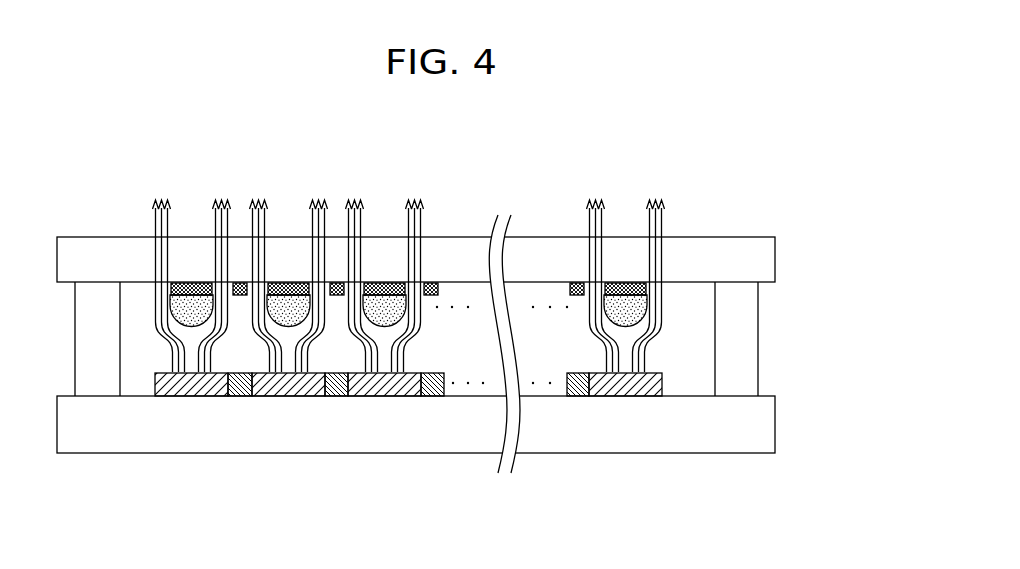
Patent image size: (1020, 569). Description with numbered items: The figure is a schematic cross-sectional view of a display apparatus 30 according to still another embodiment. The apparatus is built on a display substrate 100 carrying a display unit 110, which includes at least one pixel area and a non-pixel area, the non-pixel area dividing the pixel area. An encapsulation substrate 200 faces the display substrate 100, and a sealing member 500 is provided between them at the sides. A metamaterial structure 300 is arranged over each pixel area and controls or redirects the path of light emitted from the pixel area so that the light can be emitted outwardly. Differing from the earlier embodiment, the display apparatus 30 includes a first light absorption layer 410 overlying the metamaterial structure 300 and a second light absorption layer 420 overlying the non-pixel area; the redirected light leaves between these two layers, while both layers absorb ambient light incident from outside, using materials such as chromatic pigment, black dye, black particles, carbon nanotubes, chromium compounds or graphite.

The display apparatus 30 is at (760, 202).
The display substrate 100 is at (773, 424).
The display unit 110 is at (190, 397).
The encapsulation substrate 200 is at (773, 258).
The metamaterial structure 300 is at (623, 313).
The first light absorption layer 410 is at (628, 282).
The second light absorption layer 420 is at (577, 282).
The sealing member 500 is at (755, 363).